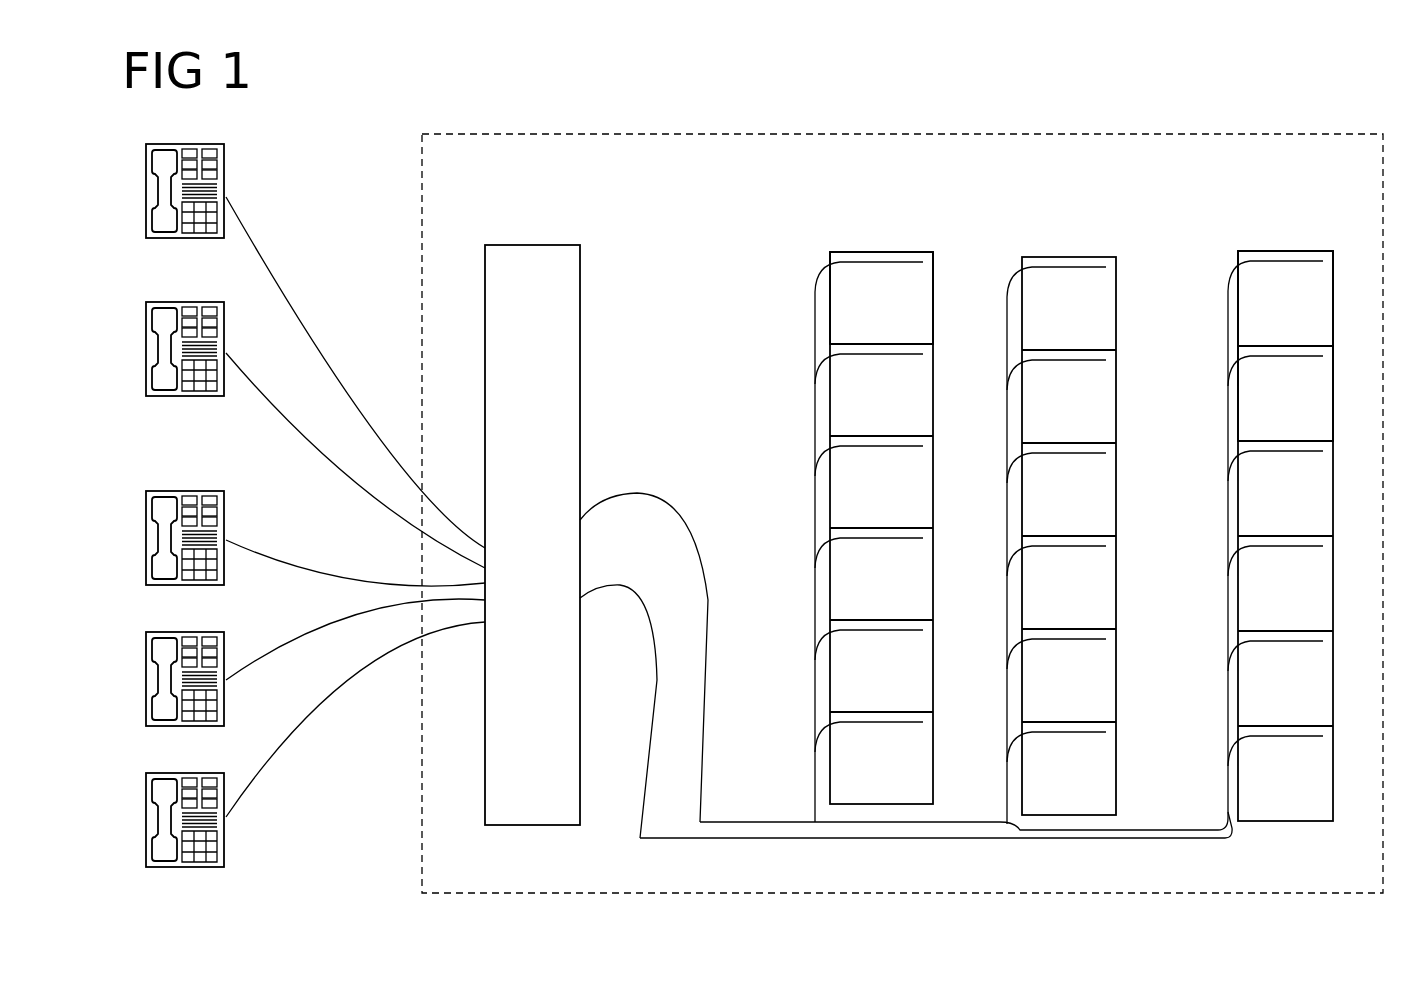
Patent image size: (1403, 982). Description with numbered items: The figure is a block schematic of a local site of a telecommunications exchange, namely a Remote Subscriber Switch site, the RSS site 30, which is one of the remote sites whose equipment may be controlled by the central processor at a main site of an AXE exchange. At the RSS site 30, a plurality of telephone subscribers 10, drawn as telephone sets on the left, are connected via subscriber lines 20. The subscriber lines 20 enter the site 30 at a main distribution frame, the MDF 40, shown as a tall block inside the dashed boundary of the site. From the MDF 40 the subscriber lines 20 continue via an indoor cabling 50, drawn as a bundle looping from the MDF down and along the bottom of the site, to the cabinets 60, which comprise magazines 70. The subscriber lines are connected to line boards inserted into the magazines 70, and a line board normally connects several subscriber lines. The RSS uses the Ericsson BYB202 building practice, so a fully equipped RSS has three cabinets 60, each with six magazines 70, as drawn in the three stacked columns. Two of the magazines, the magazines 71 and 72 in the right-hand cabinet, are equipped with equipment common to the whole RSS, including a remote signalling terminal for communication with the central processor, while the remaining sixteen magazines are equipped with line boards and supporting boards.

The telephone subscribers 10 is at (213, 238).
The subscriber lines 20 is at (362, 410).
The RSS site 30 is at (596, 121).
The main distribution frame (MDF) 40 is at (568, 245).
The indoor cabling 50 is at (662, 495).
The cabinets 60 is at (1265, 251).
The magazines 70 is at (881, 298).
The magazine for common equipment 71 is at (1285, 298).
The magazine for common equipment 72 is at (1285, 393).